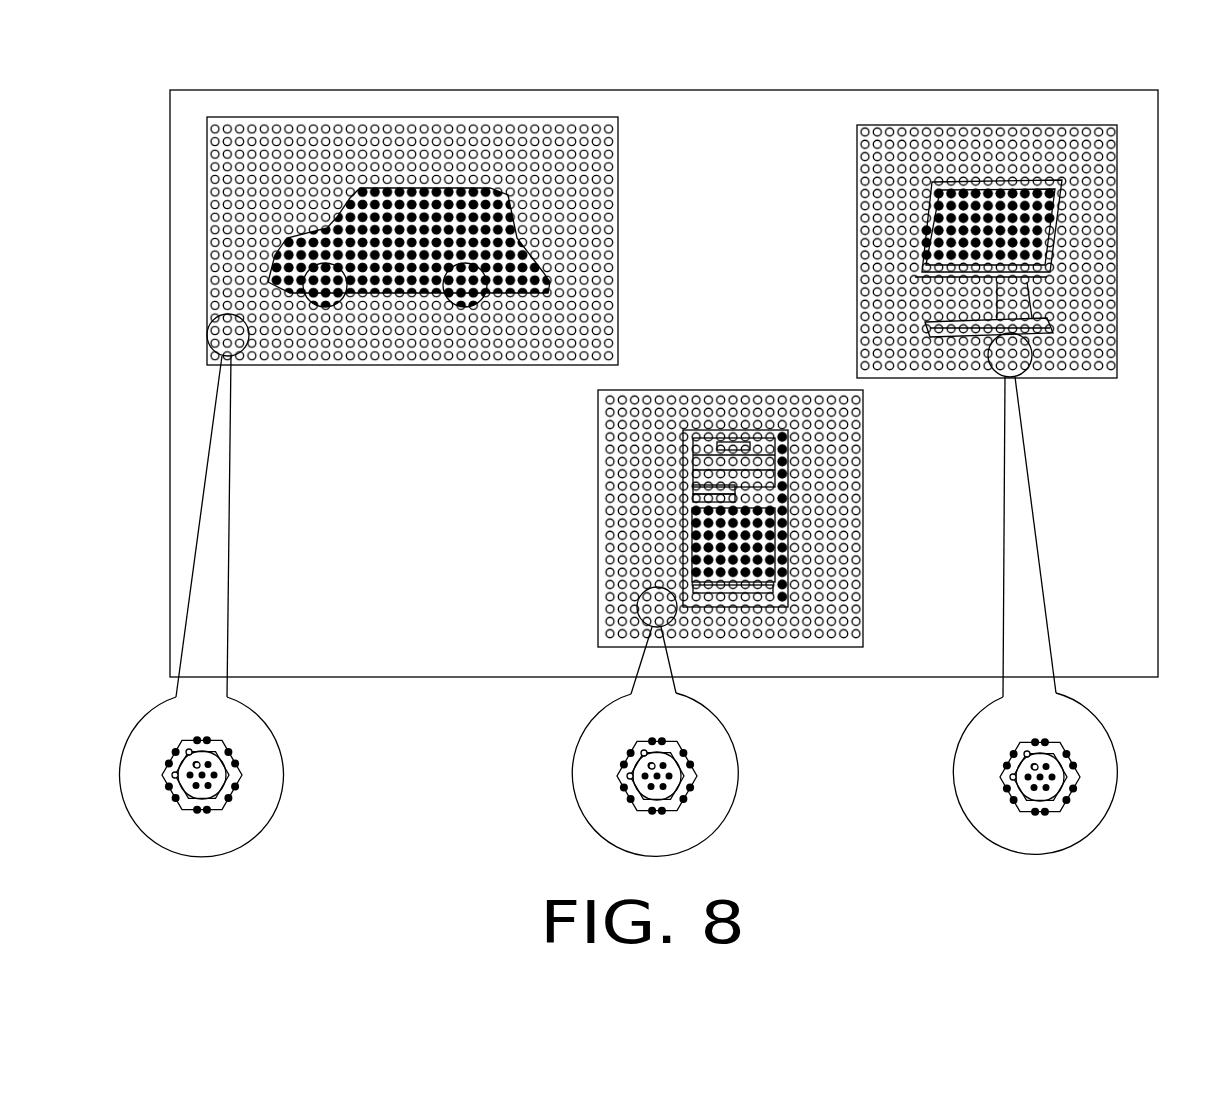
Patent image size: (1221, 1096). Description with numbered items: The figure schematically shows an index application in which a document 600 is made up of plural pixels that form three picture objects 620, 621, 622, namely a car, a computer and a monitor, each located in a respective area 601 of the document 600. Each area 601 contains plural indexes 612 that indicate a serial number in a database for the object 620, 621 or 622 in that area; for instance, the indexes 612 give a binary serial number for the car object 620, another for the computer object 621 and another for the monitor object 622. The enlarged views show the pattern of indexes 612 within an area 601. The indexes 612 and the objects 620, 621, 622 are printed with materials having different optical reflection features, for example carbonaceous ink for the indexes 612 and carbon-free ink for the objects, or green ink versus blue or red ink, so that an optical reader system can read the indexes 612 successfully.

The document 600 is at (759, 90).
The area 601 is at (315, 112).
The indexes 612 is at (243, 761).
The picture object 620 is at (489, 188).
The picture object 621 is at (770, 578).
The picture object 622 is at (1005, 190).